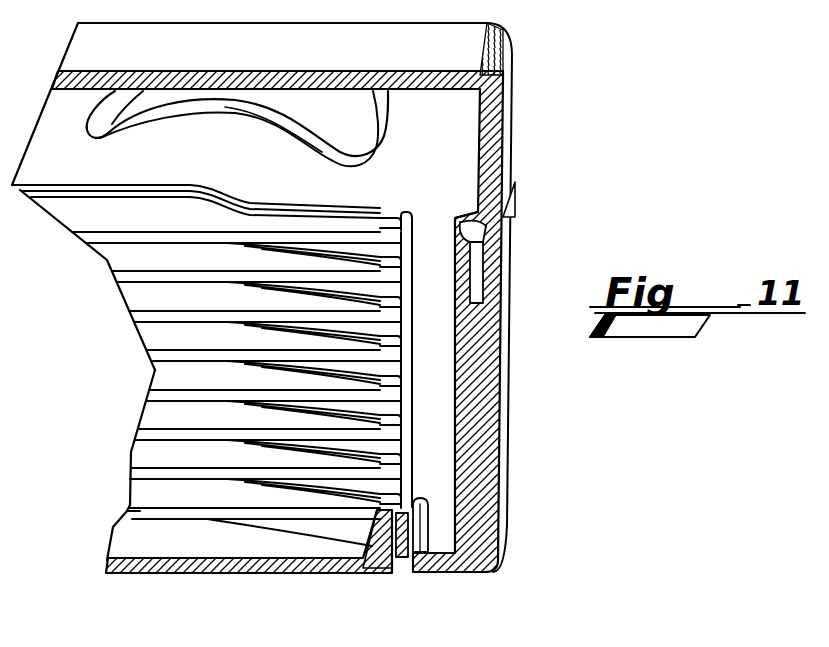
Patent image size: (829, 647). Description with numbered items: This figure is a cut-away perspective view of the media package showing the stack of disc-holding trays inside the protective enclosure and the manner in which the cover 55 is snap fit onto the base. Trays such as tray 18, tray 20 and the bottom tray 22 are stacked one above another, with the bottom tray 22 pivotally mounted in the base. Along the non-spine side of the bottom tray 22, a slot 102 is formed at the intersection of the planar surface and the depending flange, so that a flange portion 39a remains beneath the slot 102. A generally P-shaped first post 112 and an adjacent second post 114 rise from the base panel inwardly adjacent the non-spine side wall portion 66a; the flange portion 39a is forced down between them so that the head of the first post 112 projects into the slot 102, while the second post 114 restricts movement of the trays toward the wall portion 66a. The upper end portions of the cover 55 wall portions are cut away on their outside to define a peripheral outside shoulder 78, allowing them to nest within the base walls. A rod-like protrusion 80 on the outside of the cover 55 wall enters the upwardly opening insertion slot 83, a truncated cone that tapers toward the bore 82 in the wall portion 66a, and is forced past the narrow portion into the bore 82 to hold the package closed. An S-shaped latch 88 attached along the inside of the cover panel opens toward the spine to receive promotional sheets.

The disc-holding tray 18 is at (212, 415).
The disc-holding tray 20 is at (167, 458).
The bottom tray 22 is at (180, 497).
The depending flange portion 39a is at (400, 558).
The cover 55 is at (507, 112).
The non-spine side wall portion 66a is at (490, 422).
The peripheral outside shoulder 78 is at (476, 212).
The rod-like protrusion 80 is at (485, 250).
The bore 82 is at (488, 277).
The insertion slot 83 is at (505, 217).
The S-shaped latch 88 is at (386, 108).
The slot 102 is at (373, 510).
The first post 112 is at (380, 532).
The second post 114 is at (420, 537).